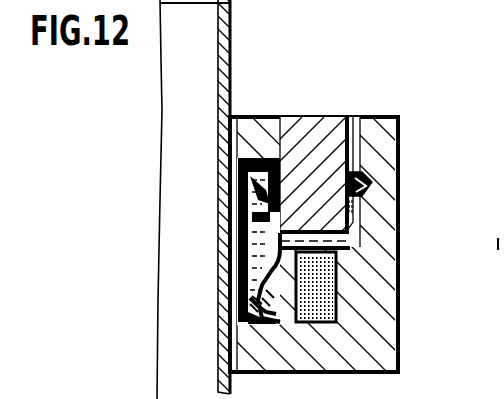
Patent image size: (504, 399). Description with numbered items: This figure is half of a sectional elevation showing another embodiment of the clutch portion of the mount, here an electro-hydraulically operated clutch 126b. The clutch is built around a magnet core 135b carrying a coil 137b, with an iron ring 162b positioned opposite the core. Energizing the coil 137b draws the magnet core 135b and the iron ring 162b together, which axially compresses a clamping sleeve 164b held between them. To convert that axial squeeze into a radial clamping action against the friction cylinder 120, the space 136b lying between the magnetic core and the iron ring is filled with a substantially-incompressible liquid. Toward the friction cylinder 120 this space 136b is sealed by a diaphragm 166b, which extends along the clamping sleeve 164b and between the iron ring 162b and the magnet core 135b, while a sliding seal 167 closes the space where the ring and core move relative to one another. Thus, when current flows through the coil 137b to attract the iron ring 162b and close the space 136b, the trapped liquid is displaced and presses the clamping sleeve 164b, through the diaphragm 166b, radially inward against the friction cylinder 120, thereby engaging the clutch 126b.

The wall / panel 120 is at (232, 43).
The iron ring 162b is at (312, 116).
The diaphragm 166b is at (266, 162).
The sliding seal 167 is at (373, 183).
The clutch 126b is at (418, 204).
The magnet core 135b is at (383, 258).
The space 136b is at (258, 243).
The clamping sleeve 164b is at (240, 266).
The coil 137b is at (337, 283).